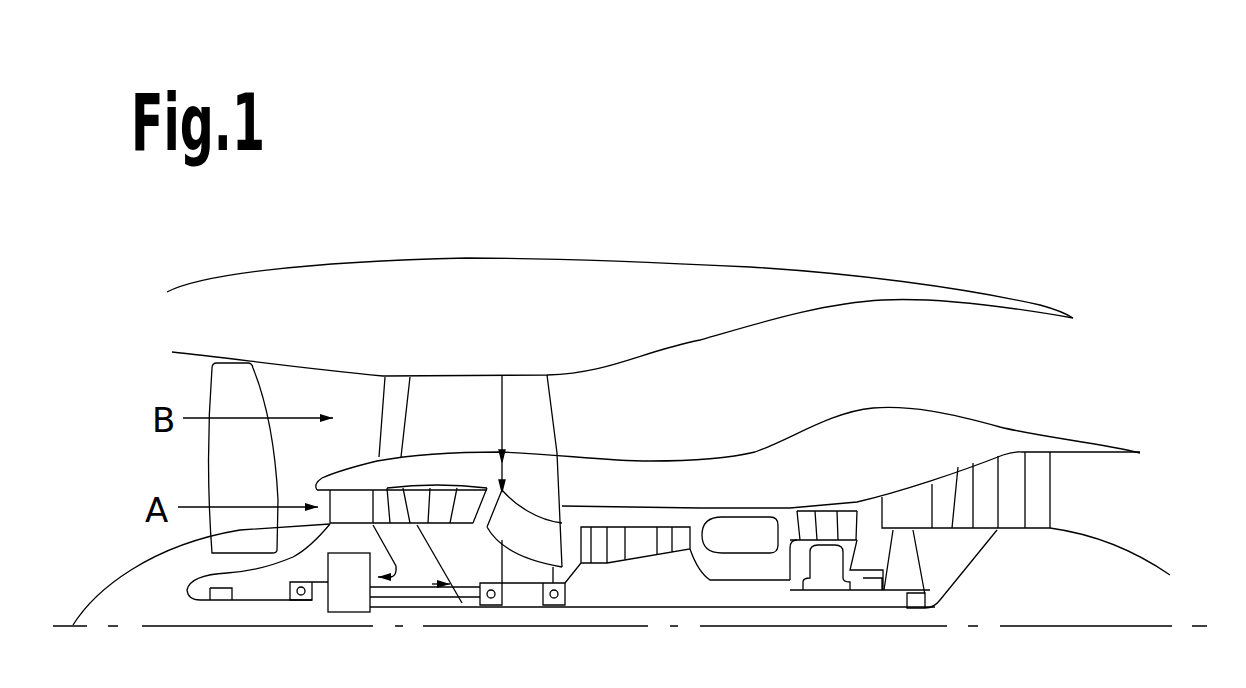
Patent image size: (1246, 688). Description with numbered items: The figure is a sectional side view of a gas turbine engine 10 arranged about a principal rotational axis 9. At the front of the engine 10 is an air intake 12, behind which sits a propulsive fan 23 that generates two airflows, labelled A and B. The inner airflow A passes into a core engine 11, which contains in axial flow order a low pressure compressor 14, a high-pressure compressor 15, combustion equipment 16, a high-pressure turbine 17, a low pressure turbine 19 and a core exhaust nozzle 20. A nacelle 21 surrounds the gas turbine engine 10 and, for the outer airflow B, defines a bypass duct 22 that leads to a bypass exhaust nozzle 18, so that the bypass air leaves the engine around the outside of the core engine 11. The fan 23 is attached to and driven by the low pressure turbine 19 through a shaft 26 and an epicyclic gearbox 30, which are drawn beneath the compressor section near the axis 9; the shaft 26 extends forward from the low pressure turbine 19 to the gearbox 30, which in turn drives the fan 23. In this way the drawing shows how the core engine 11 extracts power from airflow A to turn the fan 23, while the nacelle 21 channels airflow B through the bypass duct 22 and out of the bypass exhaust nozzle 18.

The principal rotational axis 9 is at (1000, 626).
The gas turbine engine 10 is at (187, 282).
The core engine 11 is at (719, 492).
The air intake 12 is at (170, 383).
The low pressure compressor 14 is at (444, 490).
The high-pressure compressor 15 is at (637, 540).
The combustion equipment 16 is at (757, 540).
The high-pressure turbine 17 is at (828, 523).
The bypass exhaust nozzle 18 is at (997, 348).
The low pressure turbine 19 is at (1012, 478).
The core exhaust nozzle 20 is at (1103, 505).
The nacelle 21 is at (533, 283).
The bypass duct 22 is at (887, 369).
The propulsive fan 23 is at (213, 462).
The shaft 26 is at (633, 607).
The epicyclic gearbox 30 is at (348, 590).